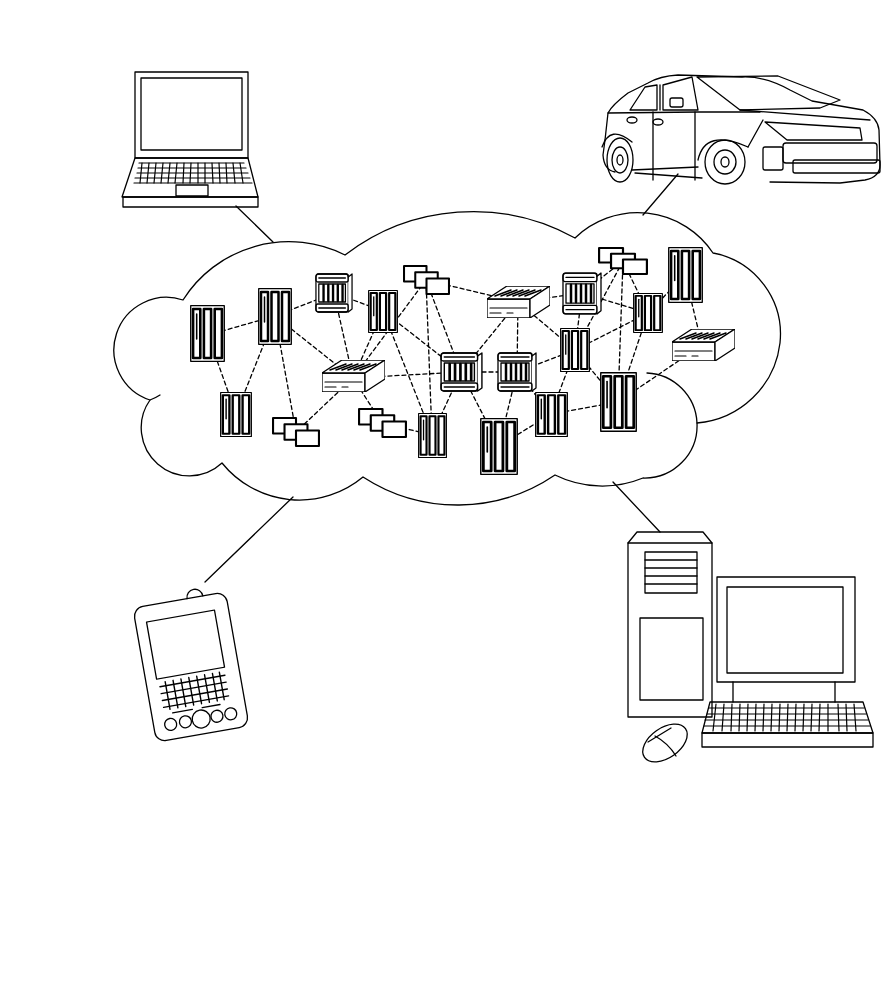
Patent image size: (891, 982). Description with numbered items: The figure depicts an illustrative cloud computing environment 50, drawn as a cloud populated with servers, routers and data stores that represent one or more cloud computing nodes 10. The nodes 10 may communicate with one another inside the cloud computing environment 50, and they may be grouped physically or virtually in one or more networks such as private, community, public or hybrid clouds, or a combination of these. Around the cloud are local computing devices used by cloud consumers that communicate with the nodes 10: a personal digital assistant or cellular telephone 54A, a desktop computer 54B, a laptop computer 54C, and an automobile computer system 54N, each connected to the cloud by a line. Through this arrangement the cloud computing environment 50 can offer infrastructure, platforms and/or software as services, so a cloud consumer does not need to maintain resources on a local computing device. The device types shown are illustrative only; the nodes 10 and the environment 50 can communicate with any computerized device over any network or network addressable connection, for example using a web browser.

The cloud computing nodes 10 is at (744, 369).
The cloud computing environment 50 is at (780, 340).
The personal digital assistant (PDA) or cellular telephone 54A is at (240, 656).
The desktop computer 54B is at (782, 578).
The laptop computer 54C is at (248, 121).
The automobile computer system 54N is at (608, 137).